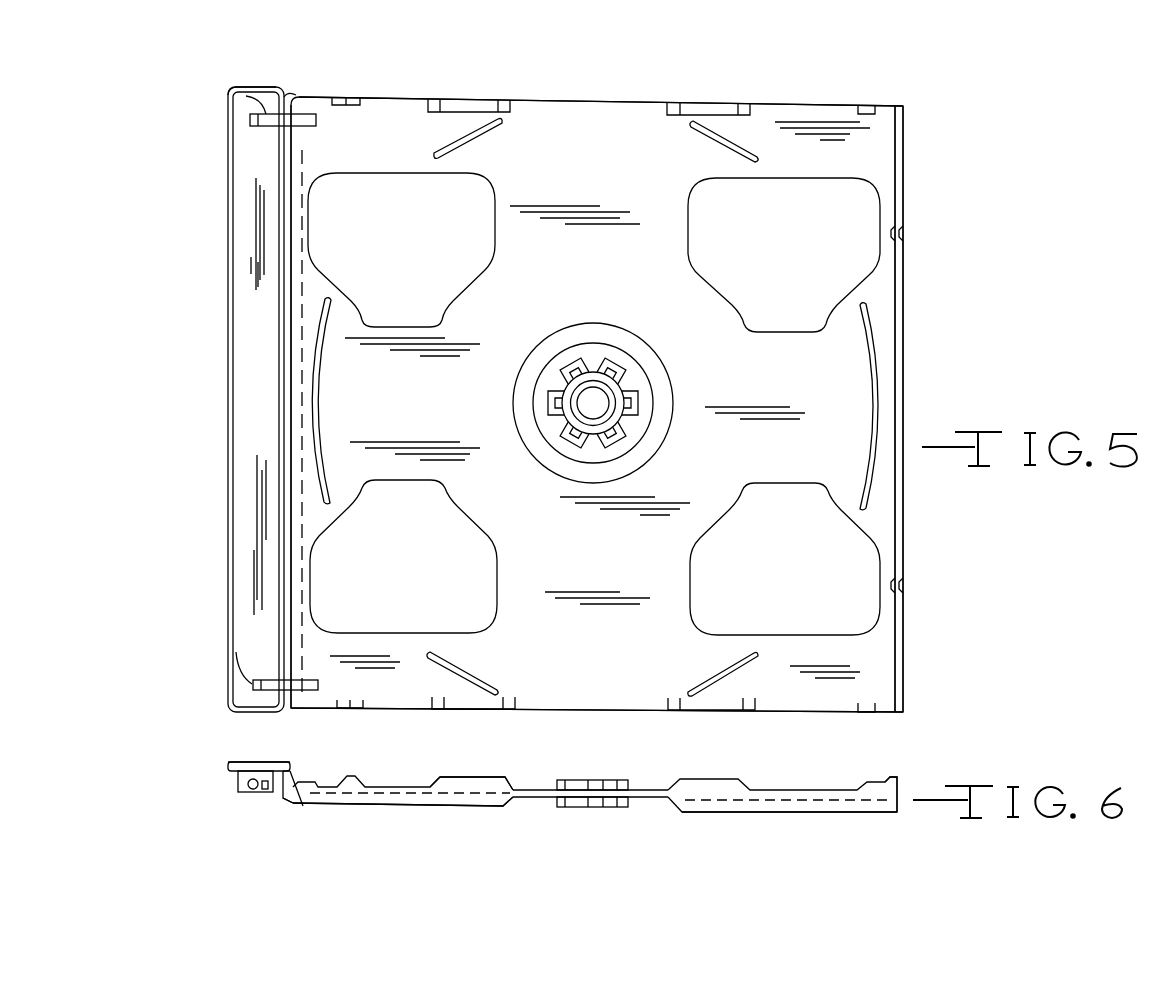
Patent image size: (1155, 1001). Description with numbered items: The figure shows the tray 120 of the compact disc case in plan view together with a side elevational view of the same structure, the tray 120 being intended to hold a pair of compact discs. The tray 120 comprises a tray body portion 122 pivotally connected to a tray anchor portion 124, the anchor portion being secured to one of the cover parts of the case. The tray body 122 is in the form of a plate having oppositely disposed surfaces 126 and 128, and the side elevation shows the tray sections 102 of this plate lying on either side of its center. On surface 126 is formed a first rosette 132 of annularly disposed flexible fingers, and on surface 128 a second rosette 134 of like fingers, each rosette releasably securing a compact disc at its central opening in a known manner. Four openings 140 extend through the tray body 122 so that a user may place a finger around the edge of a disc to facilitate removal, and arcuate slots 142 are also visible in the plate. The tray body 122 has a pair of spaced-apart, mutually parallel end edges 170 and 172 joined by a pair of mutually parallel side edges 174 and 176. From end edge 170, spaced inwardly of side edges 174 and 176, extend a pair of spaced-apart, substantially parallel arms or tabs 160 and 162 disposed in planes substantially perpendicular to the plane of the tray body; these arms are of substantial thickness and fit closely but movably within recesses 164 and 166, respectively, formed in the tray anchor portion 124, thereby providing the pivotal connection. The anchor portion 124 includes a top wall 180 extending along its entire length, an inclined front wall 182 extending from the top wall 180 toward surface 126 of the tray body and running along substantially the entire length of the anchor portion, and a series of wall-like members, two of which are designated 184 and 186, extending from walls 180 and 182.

In FIG. 6, the tray portion 102 is at (462, 806).
In FIG. 5, the tray 120 is at (220, 498).
In FIG. 6, the tray 120 is at (259, 817).
In FIG. 5, the tray body portion 122 is at (615, 140).
In FIG. 5, the tray anchor portion 124 is at (227, 325).
In FIG. 6, the tray anchor portion 124 is at (292, 760).
In FIG. 6, the surface 126 is at (535, 788).
In FIG. 6, the surface 128 is at (532, 800).
In FIG. 5, the first rosette 132 is at (639, 377).
In FIG. 6, the first rosette 132 is at (581, 778).
In FIG. 6, the second rosette 134 is at (594, 810).
In FIG. 5, the openings 140 is at (418, 175).
In FIG. 5, the slot 142 is at (468, 138).
In FIG. 5, the arm or tab 160 is at (265, 690).
In FIG. 5, the arm or tab 162 is at (230, 91).
In FIG. 5, the recess 164 is at (255, 685).
In FIG. 5, the recess 166 is at (252, 120).
In FIG. 5, the end edge 170 is at (291, 238).
In FIG. 5, the end edge 172 is at (905, 350).
In FIG. 6, the end edge 172 is at (903, 792).
In FIG. 5, the side edge 174 is at (577, 713).
In FIG. 5, the side edge 176 is at (583, 100).
In FIG. 5, the top wall 180 is at (254, 376).
In FIG. 6, the top wall 180 is at (252, 760).
In FIG. 5, the inclined front wall 182 is at (298, 92).
In FIG. 6, the inclined front wall 182 is at (298, 777).
In FIG. 6, the wall-like member 184 is at (241, 778).
In FIG. 6, the wall-like member 186 is at (280, 793).